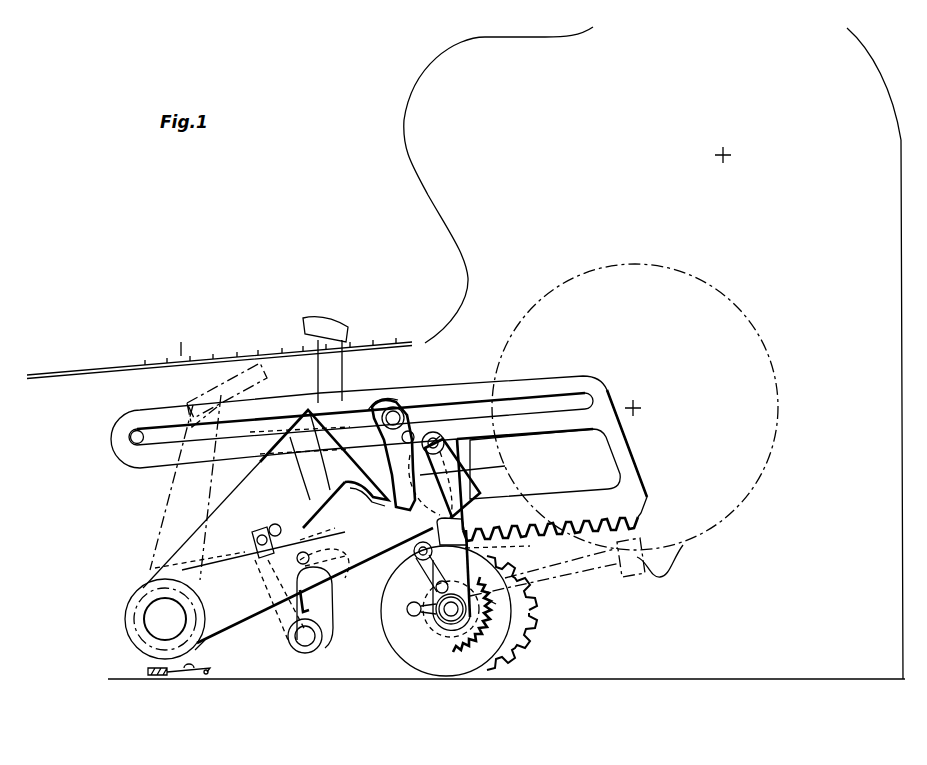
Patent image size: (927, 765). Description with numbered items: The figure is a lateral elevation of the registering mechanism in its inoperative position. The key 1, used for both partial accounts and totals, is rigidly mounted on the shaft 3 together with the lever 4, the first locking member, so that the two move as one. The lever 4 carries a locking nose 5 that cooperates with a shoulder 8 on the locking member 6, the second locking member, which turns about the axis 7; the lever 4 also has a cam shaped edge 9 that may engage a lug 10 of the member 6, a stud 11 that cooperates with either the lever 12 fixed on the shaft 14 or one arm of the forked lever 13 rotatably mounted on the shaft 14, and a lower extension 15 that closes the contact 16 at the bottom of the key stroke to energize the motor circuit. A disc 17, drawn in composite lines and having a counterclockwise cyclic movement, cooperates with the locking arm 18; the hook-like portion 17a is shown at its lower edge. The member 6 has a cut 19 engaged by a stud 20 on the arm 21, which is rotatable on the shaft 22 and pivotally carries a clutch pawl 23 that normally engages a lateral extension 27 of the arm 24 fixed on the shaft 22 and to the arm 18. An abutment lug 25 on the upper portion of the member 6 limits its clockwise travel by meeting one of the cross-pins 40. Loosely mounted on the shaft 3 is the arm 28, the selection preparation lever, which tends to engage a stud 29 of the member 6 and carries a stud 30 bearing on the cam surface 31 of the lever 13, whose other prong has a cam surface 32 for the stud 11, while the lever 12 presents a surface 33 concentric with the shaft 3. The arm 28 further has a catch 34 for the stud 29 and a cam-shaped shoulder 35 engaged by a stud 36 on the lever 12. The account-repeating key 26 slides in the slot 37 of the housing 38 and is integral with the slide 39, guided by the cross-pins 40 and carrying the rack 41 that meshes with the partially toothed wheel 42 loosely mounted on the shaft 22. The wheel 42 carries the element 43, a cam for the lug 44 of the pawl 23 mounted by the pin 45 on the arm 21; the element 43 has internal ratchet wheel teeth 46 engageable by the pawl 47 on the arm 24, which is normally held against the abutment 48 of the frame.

The key 1 is at (243, 372).
The shaft 3 is at (152, 618).
The lever 4 is at (238, 490).
The locking nose 5 is at (392, 455).
The locking member 6 is at (470, 492).
The axis 7 is at (410, 432).
The shoulder 8 is at (428, 485).
The cam shaped edge 9 is at (308, 470).
The lug 10 is at (343, 489).
The stud 11 is at (276, 525).
The lever 12 is at (283, 615).
The forked lever 13 is at (335, 601).
The shaft 14 is at (302, 636).
The extension 15 is at (210, 638).
The contact 16 is at (212, 671).
The disc 17 is at (755, 490).
The hook 17a is at (670, 567).
The locking arm 18 is at (628, 578).
The cut 19 is at (440, 436).
The stud 20 is at (440, 445).
The arm 21 is at (505, 466).
The shaft 22 is at (451, 612).
The clutch pawl 23 is at (500, 548).
The arm 24 is at (500, 588).
The abutment lug 25 is at (374, 405).
The account-repeating key 26 is at (330, 326).
The lateral extension 27 is at (463, 525).
The arm 28 is at (252, 552).
The stud 29 is at (360, 485).
The stud 30 is at (305, 556).
The cam surface 31 is at (335, 583).
The cam surface 32 is at (325, 558).
The surface 33 is at (265, 622).
The catch 34 is at (318, 530).
The cam-shaped shoulder 35 is at (153, 566).
The stud 36 is at (262, 535).
The slot 37 is at (177, 339).
The housing 38 is at (88, 368).
The slide 39 is at (585, 375).
The cross-pins 40 is at (131, 440).
The rack 41 is at (595, 532).
The partially toothed wheel 42 is at (522, 640).
The element 43 is at (488, 646).
The lug 44 is at (425, 570).
The pin 45 is at (416, 550).
The ratchet wheel teeth 46 is at (493, 605).
The pawl 47 is at (410, 585).
The abutment 48 is at (413, 606).